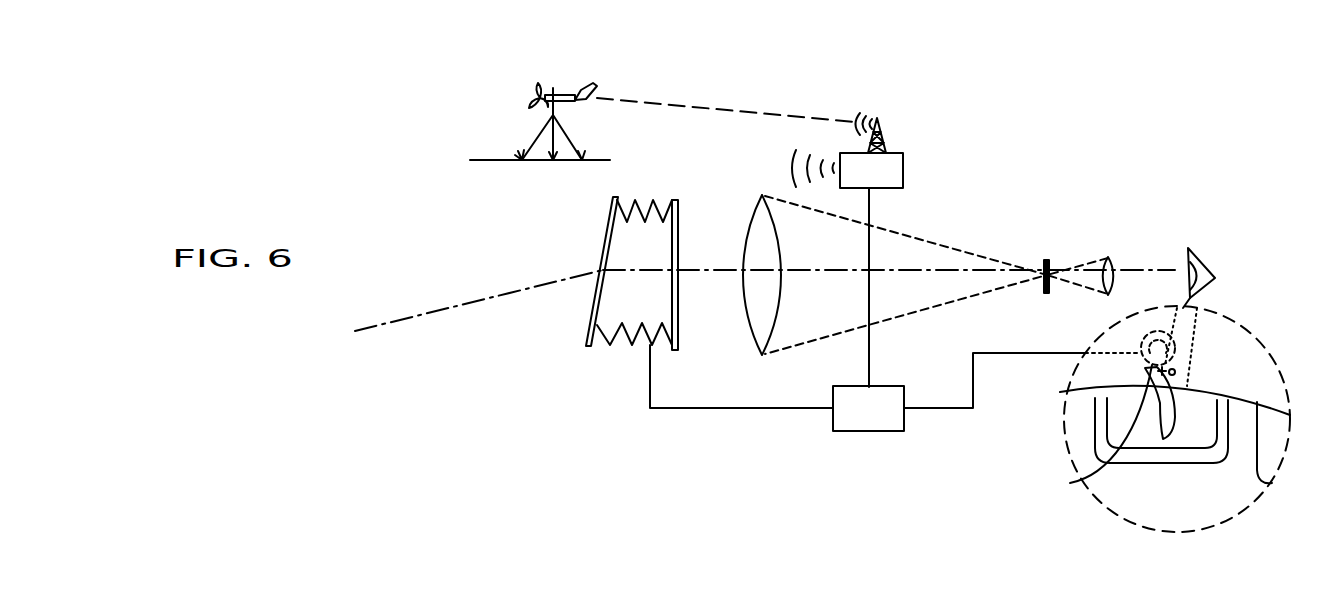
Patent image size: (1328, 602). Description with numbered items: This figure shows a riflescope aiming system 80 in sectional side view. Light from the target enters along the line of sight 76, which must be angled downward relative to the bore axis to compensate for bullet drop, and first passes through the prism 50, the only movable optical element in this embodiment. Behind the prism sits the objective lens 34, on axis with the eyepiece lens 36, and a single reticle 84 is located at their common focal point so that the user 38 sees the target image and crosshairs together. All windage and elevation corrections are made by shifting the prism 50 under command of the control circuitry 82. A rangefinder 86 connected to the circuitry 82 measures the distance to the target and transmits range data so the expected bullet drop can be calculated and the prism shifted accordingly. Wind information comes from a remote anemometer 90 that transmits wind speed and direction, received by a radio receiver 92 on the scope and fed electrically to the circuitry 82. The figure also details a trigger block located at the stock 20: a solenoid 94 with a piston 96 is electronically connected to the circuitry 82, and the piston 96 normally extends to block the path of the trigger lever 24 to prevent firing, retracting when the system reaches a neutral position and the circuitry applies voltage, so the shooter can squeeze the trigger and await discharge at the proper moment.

The stock 20 is at (1272, 484).
The trigger lever 24 is at (1183, 427).
The objective lens 34 is at (748, 242).
The eyepiece lens 36 is at (1112, 260).
The user 38 is at (1208, 246).
The prism 50 is at (621, 356).
The line of sight 76 is at (432, 315).
The riflescope aiming system 80 is at (1100, 136).
The control circuitry 82 is at (858, 432).
The reticle 84 is at (1047, 260).
The rangefinder 86 is at (903, 168).
The remote anemometer 90 is at (567, 66).
The radio receiver 92 is at (880, 125).
The solenoid 94 is at (1136, 361).
The piston 96 is at (1095, 435).